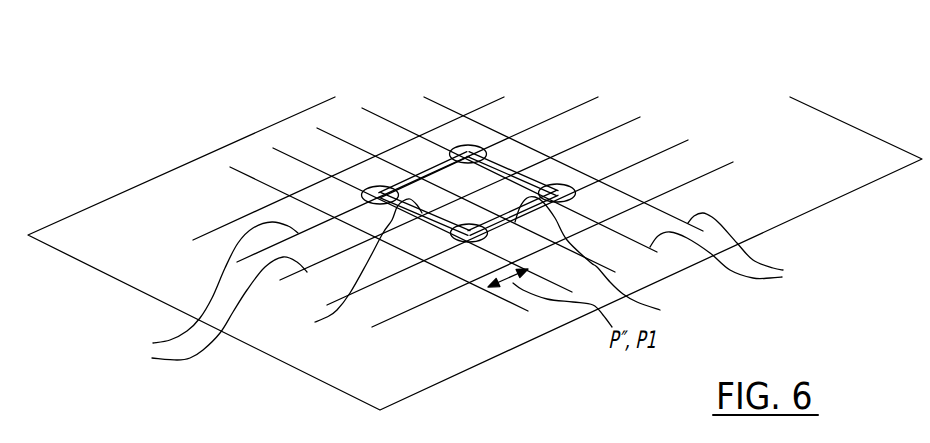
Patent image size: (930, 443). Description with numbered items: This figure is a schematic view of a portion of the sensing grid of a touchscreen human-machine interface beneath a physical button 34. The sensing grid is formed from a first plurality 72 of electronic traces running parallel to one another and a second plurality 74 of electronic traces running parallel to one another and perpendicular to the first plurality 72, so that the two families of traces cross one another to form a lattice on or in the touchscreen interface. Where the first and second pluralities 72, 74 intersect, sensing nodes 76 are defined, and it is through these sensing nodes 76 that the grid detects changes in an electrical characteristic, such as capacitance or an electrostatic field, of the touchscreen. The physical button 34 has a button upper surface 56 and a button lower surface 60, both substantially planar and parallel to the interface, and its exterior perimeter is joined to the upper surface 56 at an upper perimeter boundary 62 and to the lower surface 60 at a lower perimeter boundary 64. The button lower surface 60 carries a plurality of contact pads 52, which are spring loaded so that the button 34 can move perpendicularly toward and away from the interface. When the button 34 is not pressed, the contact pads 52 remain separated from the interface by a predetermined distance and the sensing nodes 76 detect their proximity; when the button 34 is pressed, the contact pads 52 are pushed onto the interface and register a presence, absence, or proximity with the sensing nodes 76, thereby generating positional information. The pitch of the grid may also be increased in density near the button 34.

The physical button 34 is at (488, 177).
The contact pads 52 is at (378, 186).
The button upper surface 56 is at (618, 260).
The button lower surface 60 is at (341, 268).
The upper perimeter boundary 62 is at (618, 260).
The lower perimeter boundary 64 is at (341, 268).
The first plurality of electronic traces 72 is at (217, 295).
The second plurality of electronic traces 74 is at (732, 249).
The sensing nodes 76 is at (292, 193).